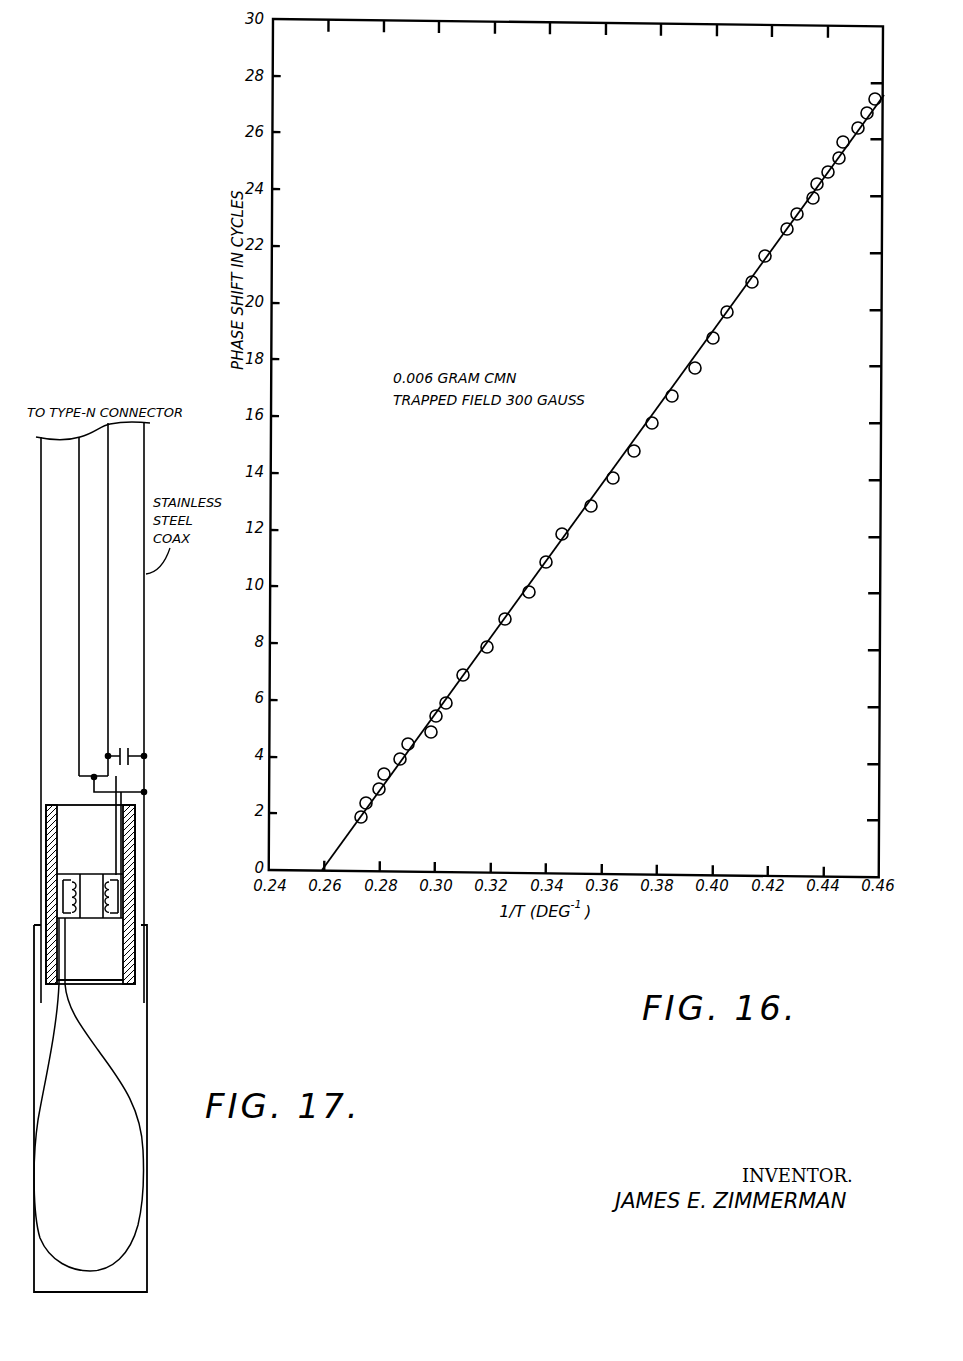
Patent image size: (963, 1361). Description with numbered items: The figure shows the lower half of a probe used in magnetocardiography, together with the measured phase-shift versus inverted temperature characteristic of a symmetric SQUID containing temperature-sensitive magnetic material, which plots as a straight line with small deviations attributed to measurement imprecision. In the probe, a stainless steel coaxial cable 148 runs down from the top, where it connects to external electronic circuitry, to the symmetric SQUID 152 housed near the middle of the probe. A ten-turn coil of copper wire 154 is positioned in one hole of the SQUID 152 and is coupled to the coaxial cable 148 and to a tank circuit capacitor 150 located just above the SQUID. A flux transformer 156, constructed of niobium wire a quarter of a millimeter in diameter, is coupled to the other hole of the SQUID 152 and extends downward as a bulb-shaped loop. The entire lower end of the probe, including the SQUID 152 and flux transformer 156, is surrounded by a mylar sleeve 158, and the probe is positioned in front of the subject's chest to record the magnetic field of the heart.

The stainless steel coaxial cable 148 is at (144, 649).
The tank circuit capacitor 150 is at (126, 749).
The SQUID 152 is at (136, 818).
The coil of copper wire 154 is at (134, 919).
The flux transformer 156 is at (125, 1086).
The mylar sleeve 158 is at (148, 1259).